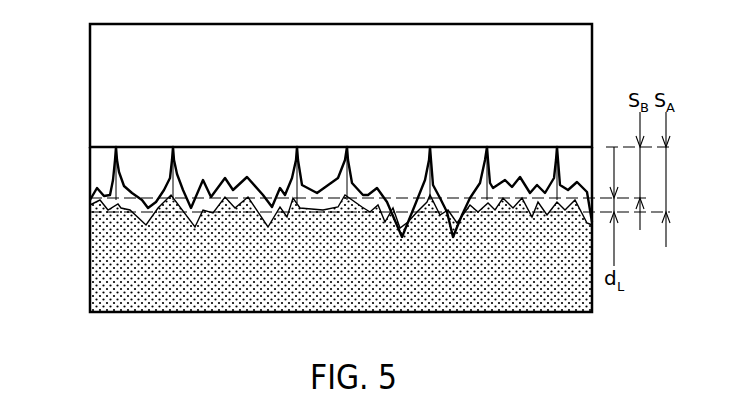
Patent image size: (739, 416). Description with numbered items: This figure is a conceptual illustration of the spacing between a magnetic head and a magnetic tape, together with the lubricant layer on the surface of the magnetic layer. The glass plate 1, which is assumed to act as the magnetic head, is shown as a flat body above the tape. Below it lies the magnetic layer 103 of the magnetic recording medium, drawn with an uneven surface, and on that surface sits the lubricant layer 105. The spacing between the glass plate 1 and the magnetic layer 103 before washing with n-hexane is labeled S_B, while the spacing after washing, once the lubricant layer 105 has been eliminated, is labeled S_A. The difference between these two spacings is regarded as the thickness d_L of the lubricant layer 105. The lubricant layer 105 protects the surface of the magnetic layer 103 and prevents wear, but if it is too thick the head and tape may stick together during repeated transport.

The glass plate 1 is at (93, 83).
The magnetic layer 103 is at (95, 260).
The lubricant layer 105 is at (93, 202).